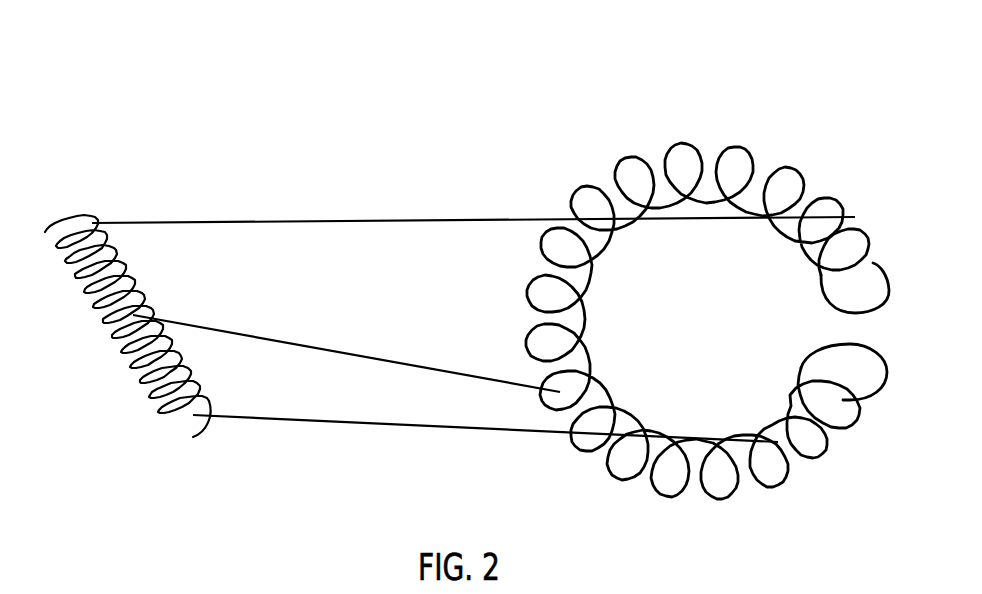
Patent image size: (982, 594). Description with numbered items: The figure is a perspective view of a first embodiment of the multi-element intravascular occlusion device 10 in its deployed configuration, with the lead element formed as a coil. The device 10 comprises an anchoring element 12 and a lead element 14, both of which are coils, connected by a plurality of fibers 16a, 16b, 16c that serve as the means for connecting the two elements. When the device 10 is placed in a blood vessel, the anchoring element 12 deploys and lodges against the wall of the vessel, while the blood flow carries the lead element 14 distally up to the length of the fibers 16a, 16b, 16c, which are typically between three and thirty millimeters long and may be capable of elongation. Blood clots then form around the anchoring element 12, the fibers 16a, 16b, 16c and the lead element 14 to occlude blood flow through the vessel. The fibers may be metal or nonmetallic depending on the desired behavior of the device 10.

The device 10 is at (193, 127).
The anchoring element 12 is at (648, 153).
The lead element 14 is at (114, 354).
The fiber 16a is at (345, 220).
The fiber 16b is at (345, 345).
The fiber 16c is at (352, 405).